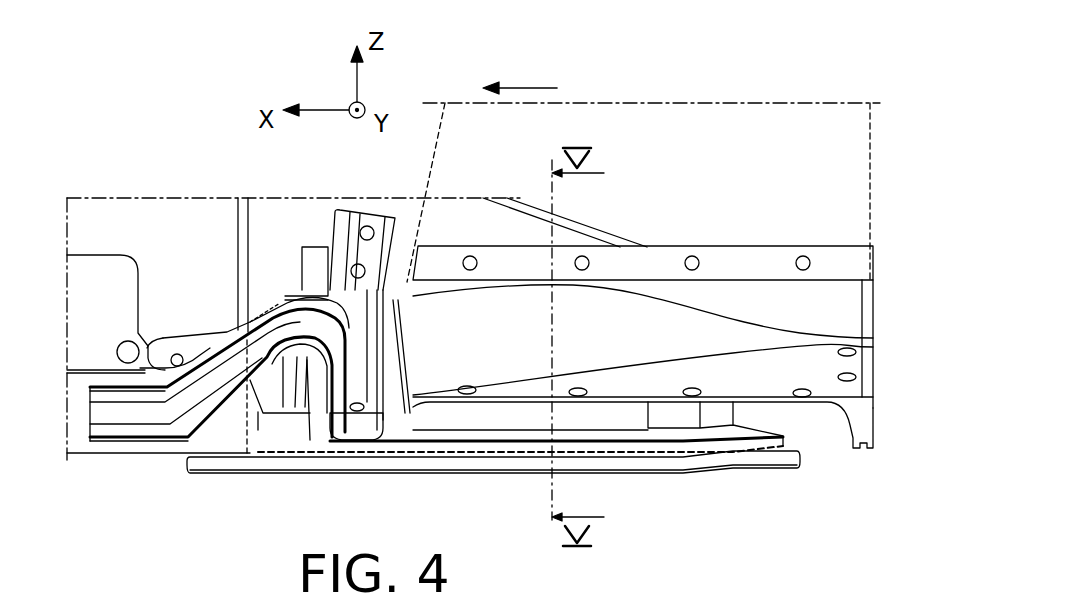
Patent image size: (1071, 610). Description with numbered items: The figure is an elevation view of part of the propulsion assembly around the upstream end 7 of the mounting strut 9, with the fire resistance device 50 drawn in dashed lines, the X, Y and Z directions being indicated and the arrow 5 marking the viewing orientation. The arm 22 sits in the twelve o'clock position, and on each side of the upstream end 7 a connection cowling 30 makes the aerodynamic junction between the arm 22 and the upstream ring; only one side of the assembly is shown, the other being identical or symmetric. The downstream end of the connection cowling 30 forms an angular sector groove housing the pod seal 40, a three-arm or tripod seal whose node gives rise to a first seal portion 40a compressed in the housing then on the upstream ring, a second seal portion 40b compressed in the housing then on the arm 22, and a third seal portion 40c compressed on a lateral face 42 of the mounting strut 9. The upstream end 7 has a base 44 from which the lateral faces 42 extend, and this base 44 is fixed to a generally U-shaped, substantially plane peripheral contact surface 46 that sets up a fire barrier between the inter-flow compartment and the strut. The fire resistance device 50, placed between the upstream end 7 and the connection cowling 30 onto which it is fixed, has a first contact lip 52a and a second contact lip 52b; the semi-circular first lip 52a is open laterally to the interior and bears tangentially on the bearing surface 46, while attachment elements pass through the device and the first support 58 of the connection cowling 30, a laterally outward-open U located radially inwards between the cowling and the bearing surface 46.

The vehicle front direction 5 is at (528, 85).
The upstream end 7 is at (128, 192).
The mounting strut 9 is at (163, 182).
The arm 22 is at (742, 112).
The connection cowling 30 is at (635, 305).
The pod seal 40 is at (212, 403).
The first seal portion 40a is at (340, 380).
The second seal portion 40b is at (358, 248).
The third seal portion 40c is at (145, 415).
The lateral face 42 is at (98, 218).
The base 44 is at (80, 462).
The peripheral contact surface 46 is at (700, 468).
The fire resistance device 50 is at (283, 462).
The first contact lip 52a is at (493, 452).
The second contact lip 52b is at (262, 300).
The first support 58 is at (785, 439).